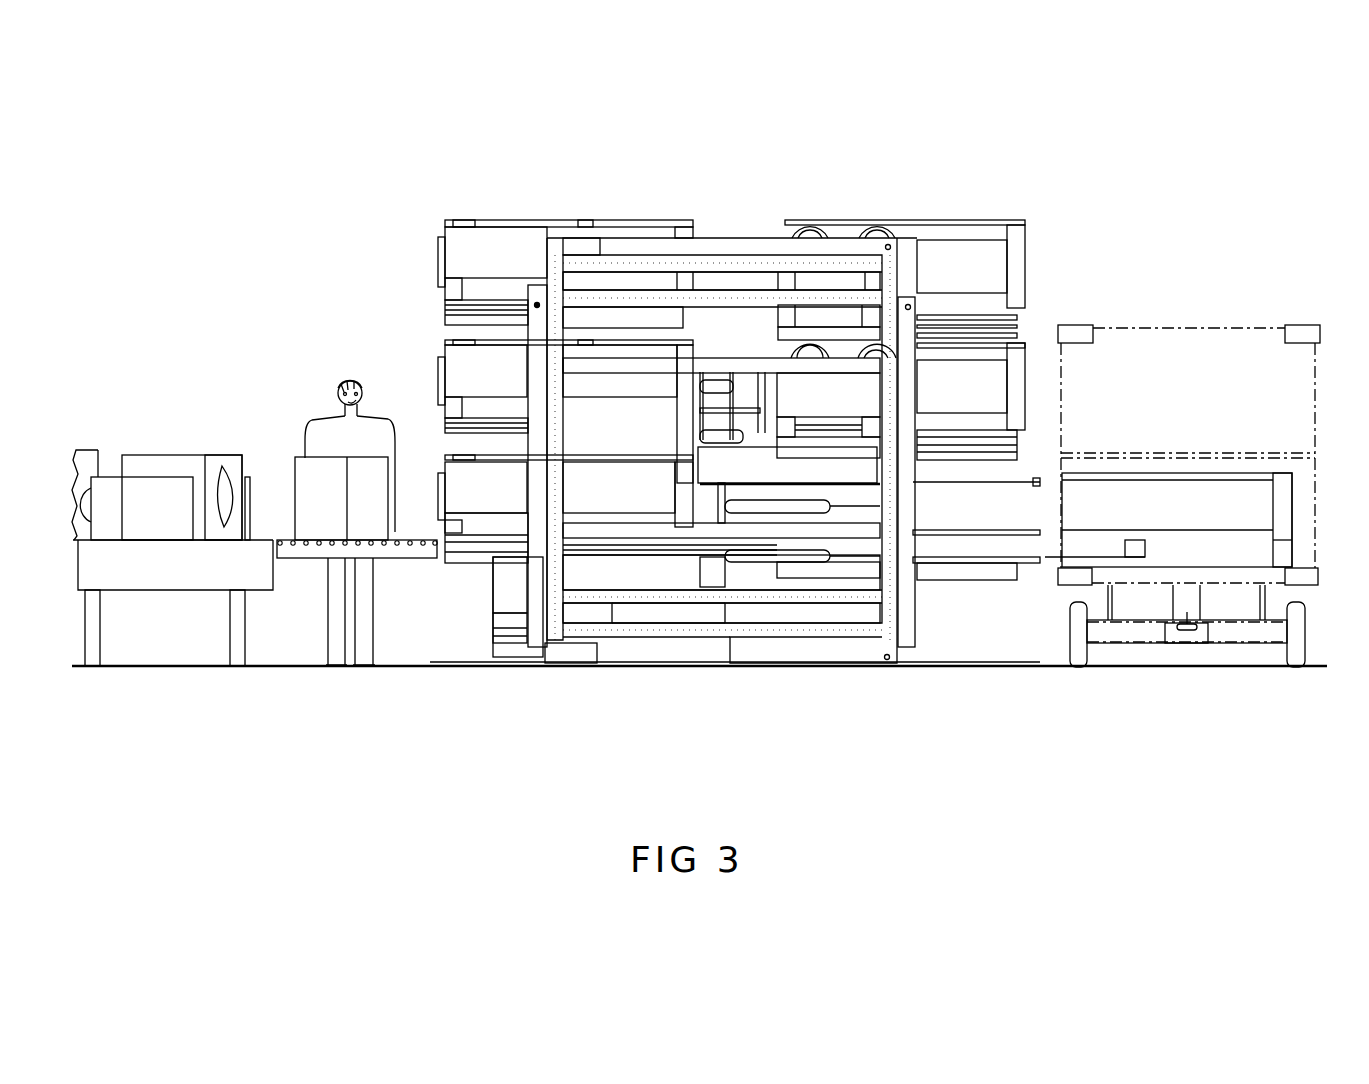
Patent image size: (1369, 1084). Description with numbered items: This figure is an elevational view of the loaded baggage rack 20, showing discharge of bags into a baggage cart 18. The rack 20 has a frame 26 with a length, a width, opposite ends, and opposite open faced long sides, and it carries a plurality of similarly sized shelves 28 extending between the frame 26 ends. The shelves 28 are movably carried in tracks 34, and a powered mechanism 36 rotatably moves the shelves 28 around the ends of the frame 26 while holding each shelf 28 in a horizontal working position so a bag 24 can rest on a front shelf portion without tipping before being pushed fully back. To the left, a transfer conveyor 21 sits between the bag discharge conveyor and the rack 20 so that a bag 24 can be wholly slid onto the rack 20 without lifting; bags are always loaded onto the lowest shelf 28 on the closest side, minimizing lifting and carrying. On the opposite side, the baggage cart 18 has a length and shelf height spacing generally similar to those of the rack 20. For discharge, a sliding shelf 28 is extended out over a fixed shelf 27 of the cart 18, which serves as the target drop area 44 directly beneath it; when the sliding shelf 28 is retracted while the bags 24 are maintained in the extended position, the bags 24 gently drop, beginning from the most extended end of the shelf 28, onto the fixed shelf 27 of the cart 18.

The baggage cart 18 is at (1189, 290).
The baggage rack 20 is at (494, 160).
The transfer conveyor 21 is at (413, 550).
The bag 24 is at (1285, 500).
The frame 26 is at (725, 288).
The fixed shelf 27 is at (1188, 453).
The shelf 28 is at (477, 365).
The track 34 is at (840, 265).
The powered mechanism 36 is at (908, 327).
The target drop area 44 is at (1155, 583).